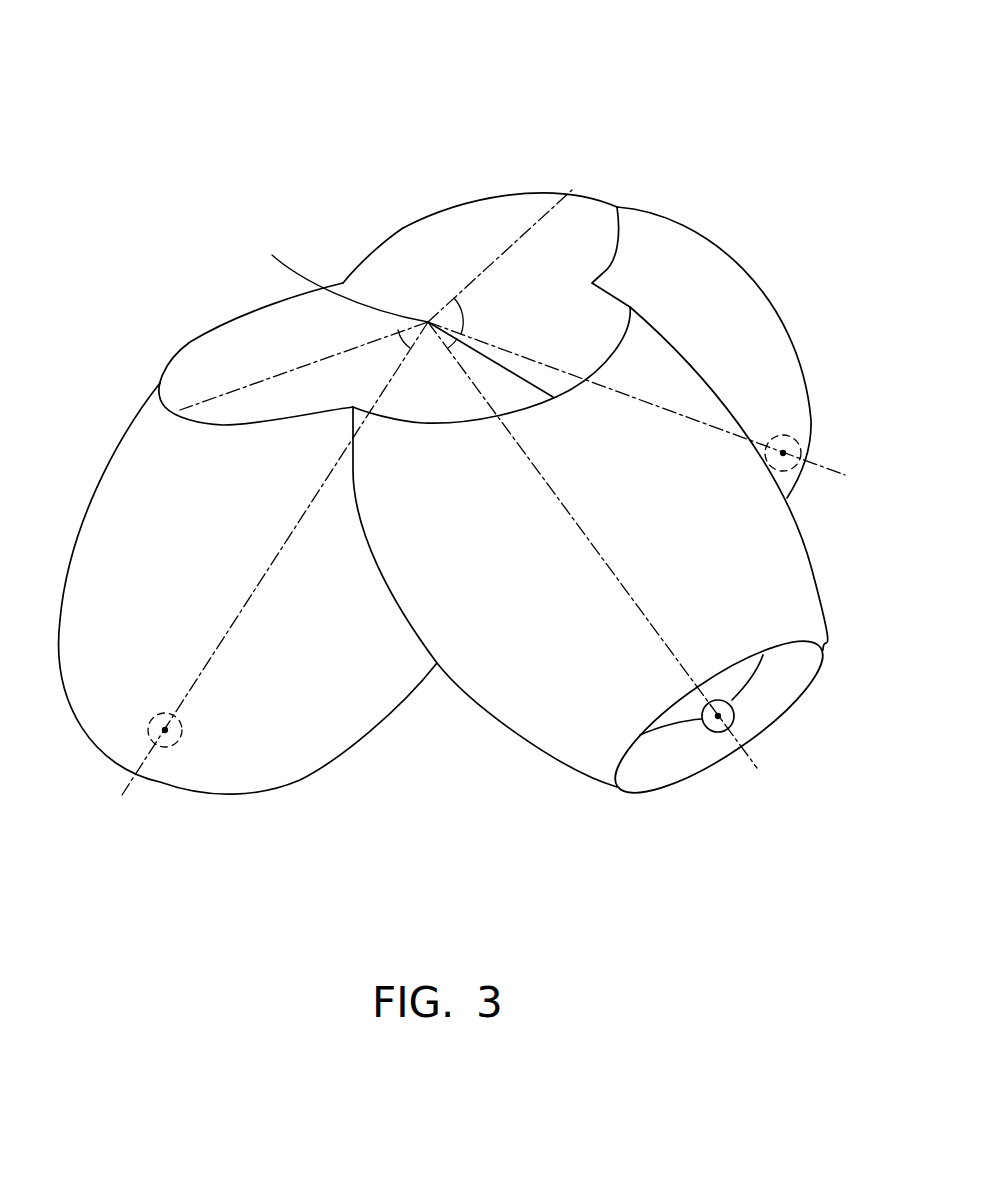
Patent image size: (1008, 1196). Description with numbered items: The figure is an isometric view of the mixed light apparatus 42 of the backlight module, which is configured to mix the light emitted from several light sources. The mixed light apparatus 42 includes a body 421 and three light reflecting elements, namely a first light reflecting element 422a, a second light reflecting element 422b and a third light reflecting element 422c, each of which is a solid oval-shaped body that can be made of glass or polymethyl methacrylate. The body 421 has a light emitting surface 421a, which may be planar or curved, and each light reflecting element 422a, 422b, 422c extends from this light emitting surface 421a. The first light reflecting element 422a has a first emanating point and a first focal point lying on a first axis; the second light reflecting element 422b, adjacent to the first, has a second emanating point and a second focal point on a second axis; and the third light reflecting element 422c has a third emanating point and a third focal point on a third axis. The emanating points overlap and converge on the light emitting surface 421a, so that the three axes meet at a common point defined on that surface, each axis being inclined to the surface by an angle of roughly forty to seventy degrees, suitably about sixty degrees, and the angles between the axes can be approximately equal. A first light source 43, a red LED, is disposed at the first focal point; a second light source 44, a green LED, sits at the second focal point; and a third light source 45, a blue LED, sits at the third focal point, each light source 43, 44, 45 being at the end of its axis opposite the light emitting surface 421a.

The mixed light apparatus 42 is at (361, 54).
The body 421 is at (404, 229).
The light emitting surface 421a is at (470, 222).
The first light reflecting element 422a is at (258, 770).
The second light reflecting element 422b is at (568, 698).
The third light reflecting element 422c is at (680, 273).
The first light source 43 is at (148, 731).
The second light source 44 is at (712, 732).
The third light source 45 is at (792, 468).